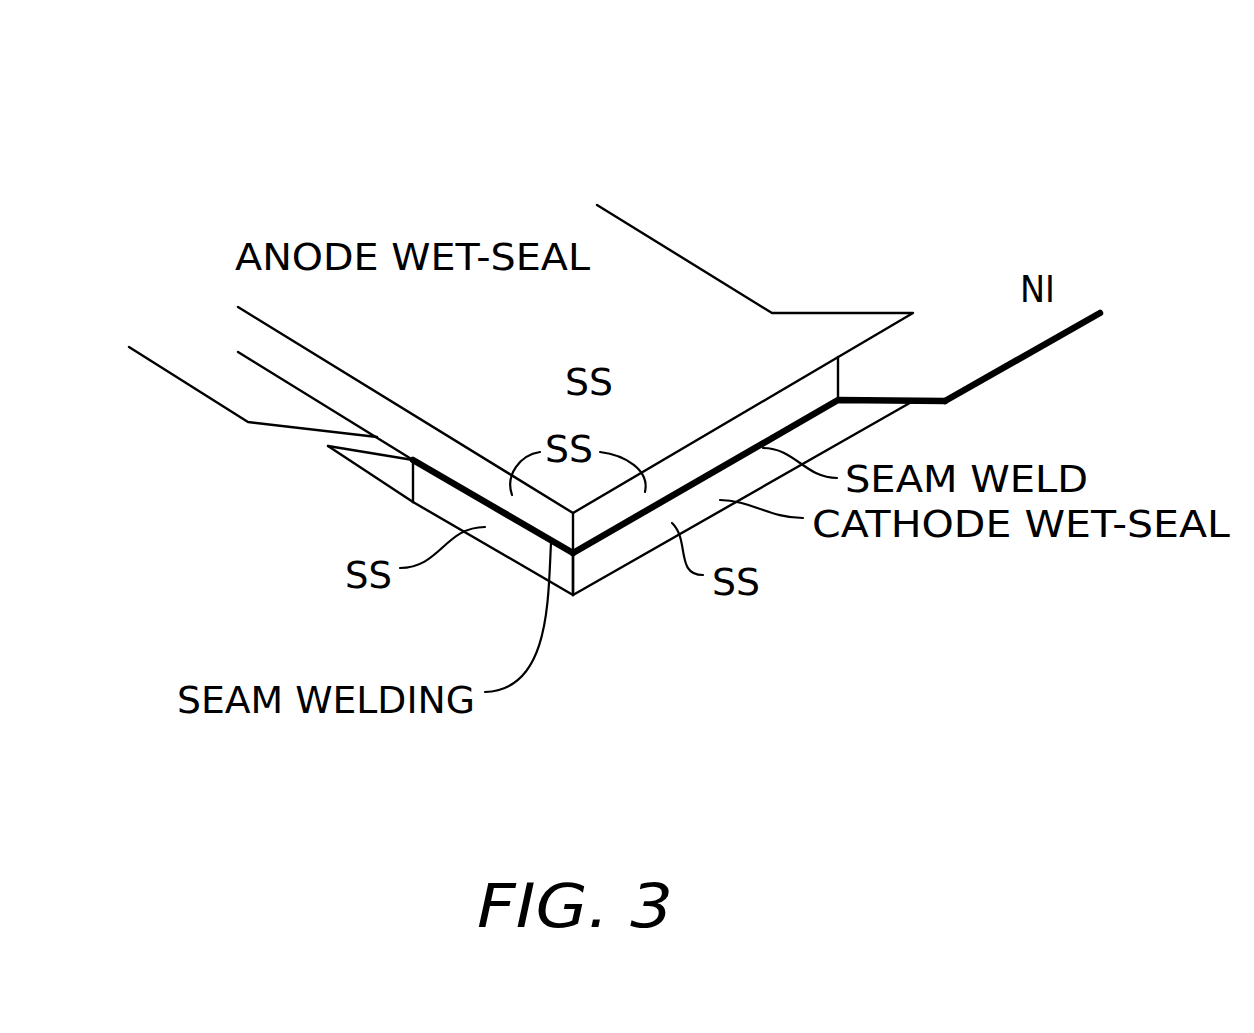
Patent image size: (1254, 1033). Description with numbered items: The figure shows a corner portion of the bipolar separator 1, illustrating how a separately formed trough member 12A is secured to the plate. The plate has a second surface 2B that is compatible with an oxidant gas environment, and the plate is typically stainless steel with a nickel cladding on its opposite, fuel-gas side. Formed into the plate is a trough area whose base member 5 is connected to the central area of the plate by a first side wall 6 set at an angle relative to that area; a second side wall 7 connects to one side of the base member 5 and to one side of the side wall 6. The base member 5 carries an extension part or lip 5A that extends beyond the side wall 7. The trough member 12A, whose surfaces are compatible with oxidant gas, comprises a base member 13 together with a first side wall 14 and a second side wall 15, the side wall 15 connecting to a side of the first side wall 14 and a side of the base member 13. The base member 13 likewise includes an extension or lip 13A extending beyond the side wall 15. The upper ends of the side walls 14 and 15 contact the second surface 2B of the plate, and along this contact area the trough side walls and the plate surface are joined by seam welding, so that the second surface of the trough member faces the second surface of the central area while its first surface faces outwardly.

The bipolar separator 1 is at (678, 148).
The second surface 2B is at (603, 285).
The base member 5 is at (847, 357).
The extension part or lip 5A is at (850, 335).
The first side wall 6 is at (413, 430).
The second side wall 7 is at (790, 410).
The trough member 12A is at (512, 560).
The base member 13 is at (998, 325).
The extension or lip 13A is at (400, 472).
The first side wall 14 is at (630, 547).
The second side wall 15 is at (448, 505).